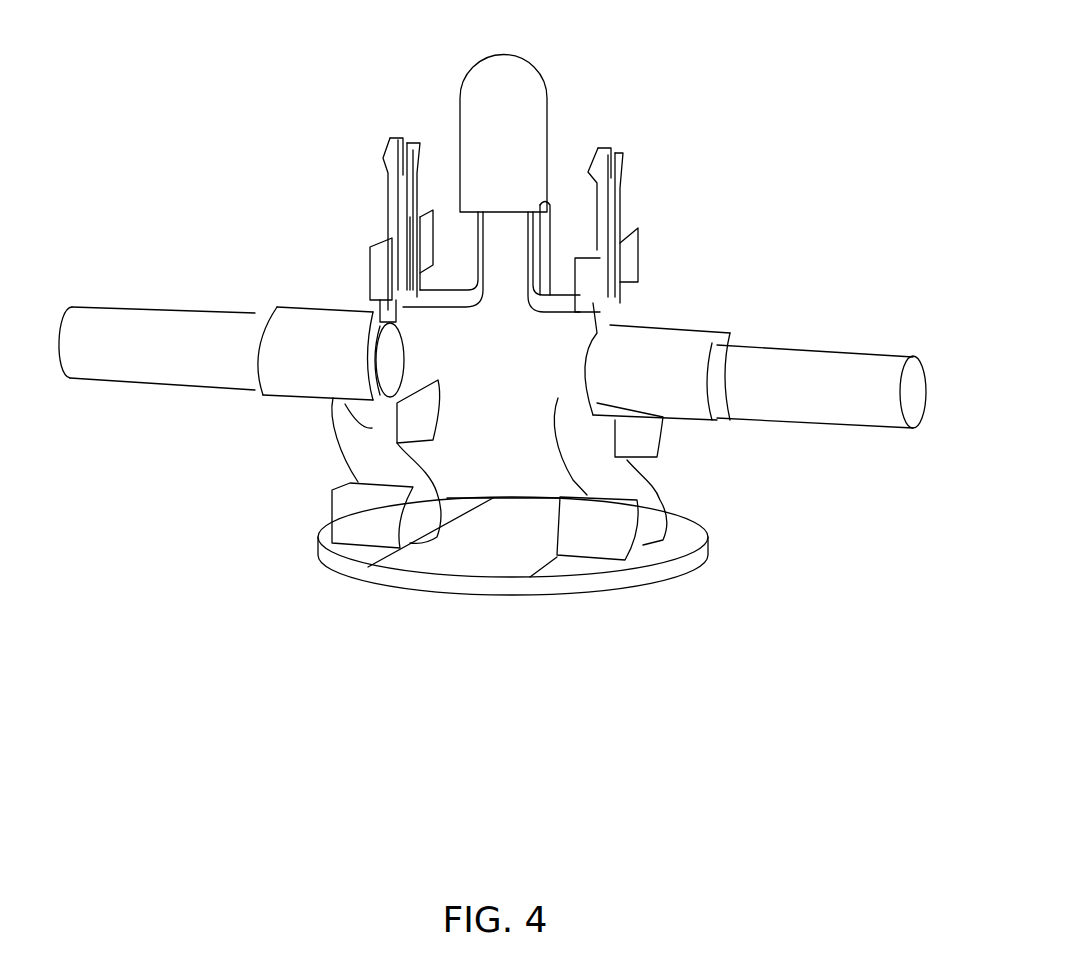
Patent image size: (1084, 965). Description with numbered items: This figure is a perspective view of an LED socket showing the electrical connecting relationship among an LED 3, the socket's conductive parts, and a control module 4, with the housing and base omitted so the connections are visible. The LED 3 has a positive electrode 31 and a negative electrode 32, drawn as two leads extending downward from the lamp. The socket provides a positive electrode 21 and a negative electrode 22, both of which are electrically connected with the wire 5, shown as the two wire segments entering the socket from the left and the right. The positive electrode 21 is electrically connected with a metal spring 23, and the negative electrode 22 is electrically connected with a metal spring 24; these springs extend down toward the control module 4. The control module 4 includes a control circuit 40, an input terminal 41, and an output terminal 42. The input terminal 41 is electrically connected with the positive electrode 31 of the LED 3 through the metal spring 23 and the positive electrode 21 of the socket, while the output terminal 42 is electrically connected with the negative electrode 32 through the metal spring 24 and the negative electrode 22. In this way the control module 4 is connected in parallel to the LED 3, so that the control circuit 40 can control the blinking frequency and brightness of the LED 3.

The LED 3 is at (511, 92).
The positive electrode 31 is at (468, 253).
The negative electrode 32 is at (531, 250).
The wire 5 is at (190, 333).
The positive electrode 21 is at (317, 333).
The negative electrode 22 is at (667, 345).
The metal spring 23 is at (372, 430).
The metal spring 24 is at (597, 448).
The input terminal 41 is at (365, 553).
The output terminal 42 is at (670, 543).
The control module 4 is at (437, 578).
The control circuit 40 is at (457, 563).